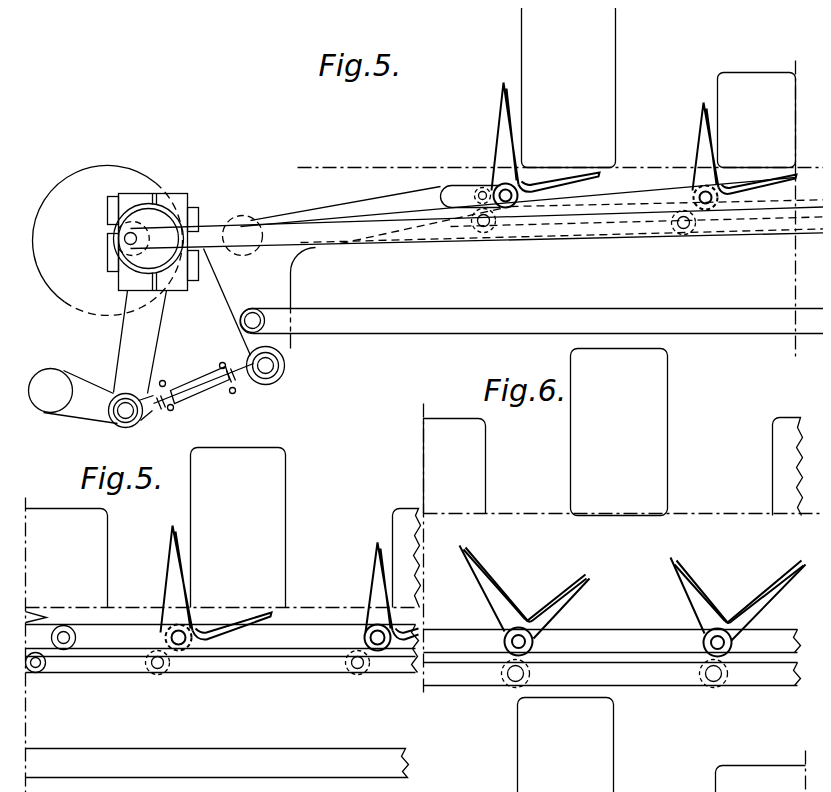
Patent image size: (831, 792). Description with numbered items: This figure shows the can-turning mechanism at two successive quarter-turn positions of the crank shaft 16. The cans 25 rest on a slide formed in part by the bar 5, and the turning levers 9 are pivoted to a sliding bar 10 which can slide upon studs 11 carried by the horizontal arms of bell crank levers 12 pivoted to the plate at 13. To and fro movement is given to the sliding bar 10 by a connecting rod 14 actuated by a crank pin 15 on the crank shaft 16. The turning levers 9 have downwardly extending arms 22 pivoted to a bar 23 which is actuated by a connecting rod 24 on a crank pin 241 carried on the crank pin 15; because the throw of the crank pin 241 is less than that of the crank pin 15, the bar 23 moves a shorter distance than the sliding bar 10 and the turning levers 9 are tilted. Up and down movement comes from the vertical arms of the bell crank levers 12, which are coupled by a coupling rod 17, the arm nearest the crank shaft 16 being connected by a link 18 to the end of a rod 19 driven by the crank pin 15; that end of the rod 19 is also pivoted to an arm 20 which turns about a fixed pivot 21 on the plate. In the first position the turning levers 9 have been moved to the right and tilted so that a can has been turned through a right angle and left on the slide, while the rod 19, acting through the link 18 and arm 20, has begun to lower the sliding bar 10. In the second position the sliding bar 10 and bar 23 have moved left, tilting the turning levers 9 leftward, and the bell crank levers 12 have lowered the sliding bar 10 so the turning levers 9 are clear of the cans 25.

In FIG. 5, the bar 5 is at (336, 167).
In FIG. 6, the bar 5 is at (710, 513).
In FIG. 5, the turning levers 9 is at (762, 196).
In FIG. 6, the turning levers 9 is at (566, 602).
In FIG. 5, the sliding bar 10 is at (611, 190).
In FIG. 6, the sliding bar 10 is at (777, 642).
In FIG. 5, the studs 11 is at (470, 192).
In FIG. 5, the bell crank levers 12 is at (244, 317).
In FIG. 5, the pivot 13 is at (243, 216).
In FIG. 5, the connecting rod 14 is at (297, 216).
In FIG. 5, the crank pin 15 is at (158, 224).
In FIG. 5, the crank shaft 16 is at (90, 258).
In FIG. 5, the coupling rod 17 is at (578, 316).
In FIG. 5, the link 18 is at (194, 386).
In FIG. 5, the rod 19 is at (138, 341).
In FIG. 5, the arm 20 is at (99, 399).
In FIG. 5, the pivot 21 is at (51, 391).
In FIG. 5, the downwardly extending arms 22 is at (495, 232).
In FIG. 6, the downwardly extending arms 22 is at (728, 672).
In FIG. 5, the bar 23 is at (586, 234).
In FIG. 6, the bar 23 is at (649, 672).
In FIG. 5, the connecting rod 24 is at (300, 230).
In FIG. 5, the crank pin 241 is at (133, 232).
In FIG. 5, the cans 25 is at (402, 542).
In FIG. 6, the cans 25 is at (778, 470).